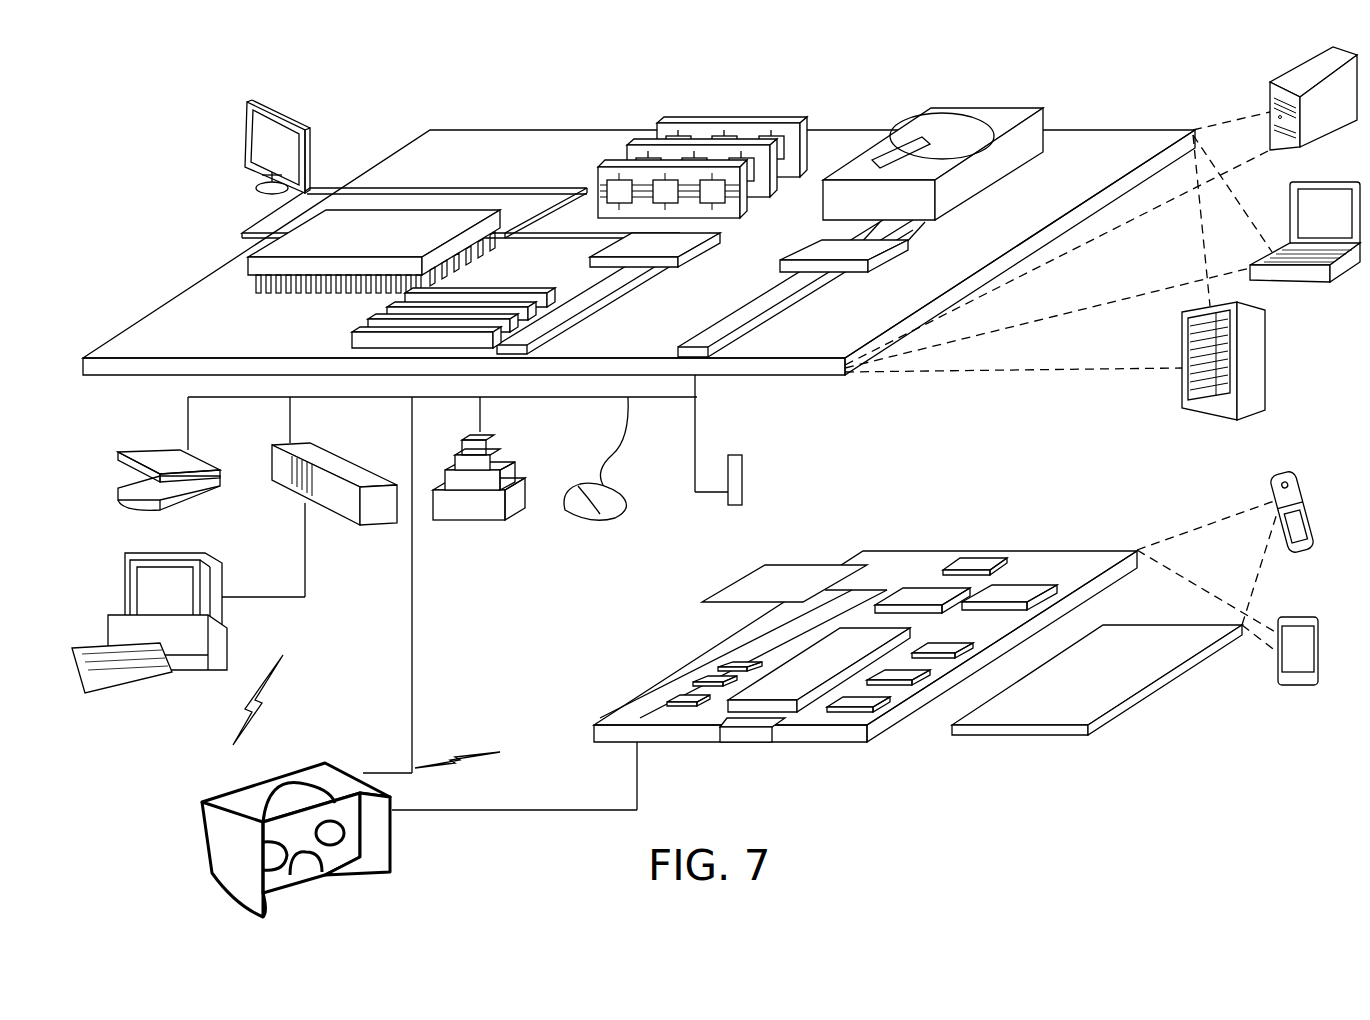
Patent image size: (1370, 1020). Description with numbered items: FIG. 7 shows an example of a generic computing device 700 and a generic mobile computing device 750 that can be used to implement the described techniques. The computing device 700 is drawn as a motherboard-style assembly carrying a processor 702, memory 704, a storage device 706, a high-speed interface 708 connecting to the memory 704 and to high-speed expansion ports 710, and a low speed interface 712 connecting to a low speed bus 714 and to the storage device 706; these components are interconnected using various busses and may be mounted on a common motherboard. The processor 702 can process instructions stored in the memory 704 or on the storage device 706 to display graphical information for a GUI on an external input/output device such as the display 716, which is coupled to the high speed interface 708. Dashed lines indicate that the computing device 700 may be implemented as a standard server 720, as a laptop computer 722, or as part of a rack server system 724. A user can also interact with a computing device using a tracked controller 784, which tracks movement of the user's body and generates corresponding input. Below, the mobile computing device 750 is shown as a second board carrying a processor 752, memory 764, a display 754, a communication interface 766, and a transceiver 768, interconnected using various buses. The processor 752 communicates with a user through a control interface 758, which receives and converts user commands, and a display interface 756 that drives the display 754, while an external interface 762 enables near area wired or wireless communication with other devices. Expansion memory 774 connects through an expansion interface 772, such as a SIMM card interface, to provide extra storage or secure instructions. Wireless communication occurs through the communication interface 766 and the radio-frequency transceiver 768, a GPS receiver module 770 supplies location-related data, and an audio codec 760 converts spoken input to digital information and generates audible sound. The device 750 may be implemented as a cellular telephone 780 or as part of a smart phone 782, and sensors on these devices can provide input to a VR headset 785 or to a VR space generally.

The computing device 700 is at (382, 72).
The processor 702 is at (276, 236).
The memory 704 is at (737, 125).
The storage device 706 is at (975, 106).
The high-speed interface 708 is at (668, 250).
The high-speed expansion ports 710 is at (375, 318).
The low speed interface 712 is at (817, 250).
The low speed bus 714 is at (697, 345).
The display 716 is at (253, 103).
The standard server 720 is at (1290, 76).
The laptop computer 722 is at (1346, 182).
The rack server system 724 is at (1266, 357).
The mobile computing device 750 is at (548, 757).
The processor 752 is at (786, 674).
The display 754 is at (1136, 642).
The display interface 756 is at (868, 703).
The control interface 758 is at (912, 673).
The audio codec 760 is at (948, 641).
The external interface 762 is at (746, 737).
The memory 764 is at (697, 673).
The communication interface 766 is at (925, 586).
The transceiver 768 is at (1020, 585).
The GPS receiver module 770 is at (979, 562).
The expansion interface 772 is at (845, 563).
The expansion memory 774 is at (756, 563).
The cellular telephone 780 is at (1283, 473).
The smart phone 782 is at (1290, 618).
The tracked controller 784 is at (746, 460).
The VR headset 785 is at (403, 820).